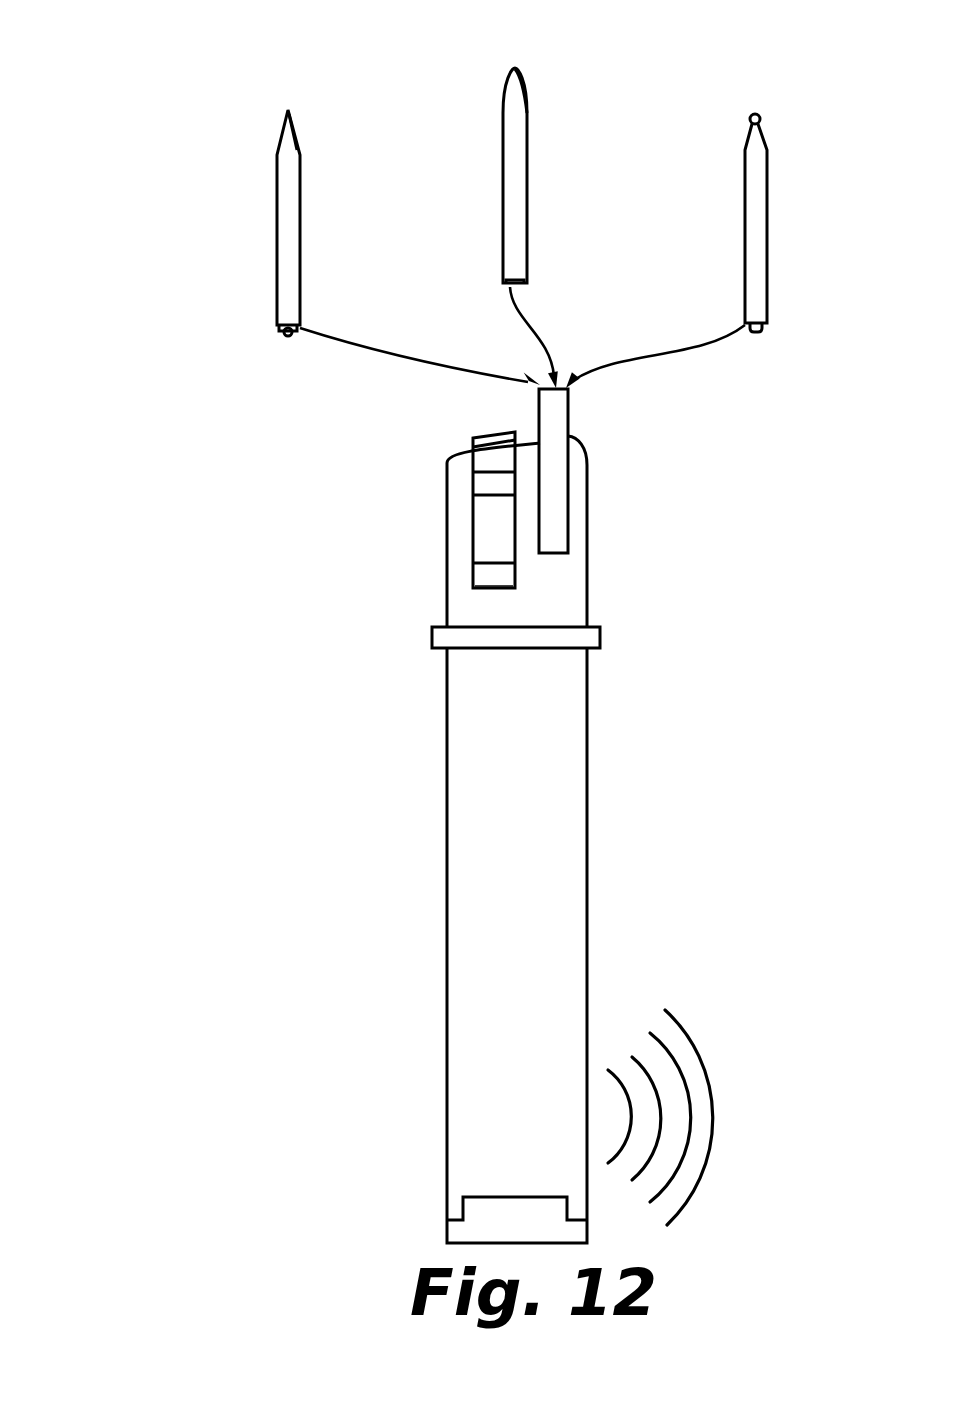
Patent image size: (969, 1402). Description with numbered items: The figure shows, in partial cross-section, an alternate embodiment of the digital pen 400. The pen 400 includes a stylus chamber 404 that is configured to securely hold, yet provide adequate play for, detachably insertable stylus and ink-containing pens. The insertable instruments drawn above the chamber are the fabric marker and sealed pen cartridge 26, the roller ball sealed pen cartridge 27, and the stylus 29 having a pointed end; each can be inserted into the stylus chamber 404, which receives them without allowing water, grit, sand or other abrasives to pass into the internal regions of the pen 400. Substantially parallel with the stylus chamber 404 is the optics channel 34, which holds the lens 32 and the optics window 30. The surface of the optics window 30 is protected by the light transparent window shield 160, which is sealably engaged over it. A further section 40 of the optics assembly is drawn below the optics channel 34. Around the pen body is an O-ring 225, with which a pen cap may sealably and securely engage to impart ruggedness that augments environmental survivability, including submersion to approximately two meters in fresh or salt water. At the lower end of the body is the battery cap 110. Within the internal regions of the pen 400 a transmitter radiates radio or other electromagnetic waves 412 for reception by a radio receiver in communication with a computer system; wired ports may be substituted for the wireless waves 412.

The digital pen 400 is at (192, 85).
The fabric marker and sealed pen cartridge 26 is at (277, 203).
The stylus 29 is at (527, 140).
The roller ball sealed pen cartridge 27 is at (768, 260).
The stylus chamber 404 is at (560, 505).
The light transparent window shield 160 is at (473, 438).
The optics window 30 is at (483, 462).
The lens 32 is at (482, 485).
The optics channel 34 is at (490, 522).
The bottom section 40 is at (497, 573).
The O-ring 225 is at (590, 640).
The electromagnetic waves 412 is at (710, 1087).
The battery cap 110 is at (490, 1220).